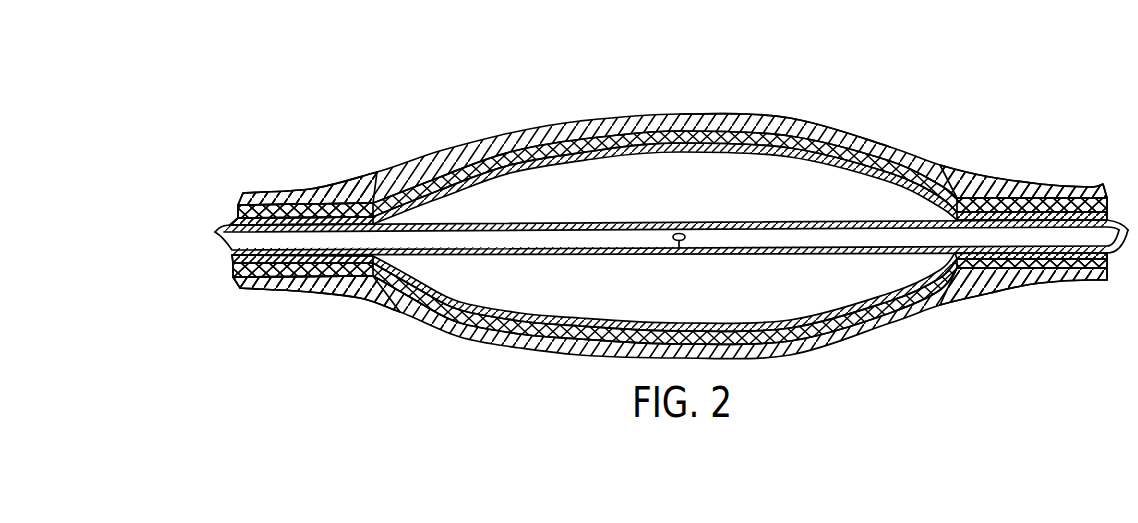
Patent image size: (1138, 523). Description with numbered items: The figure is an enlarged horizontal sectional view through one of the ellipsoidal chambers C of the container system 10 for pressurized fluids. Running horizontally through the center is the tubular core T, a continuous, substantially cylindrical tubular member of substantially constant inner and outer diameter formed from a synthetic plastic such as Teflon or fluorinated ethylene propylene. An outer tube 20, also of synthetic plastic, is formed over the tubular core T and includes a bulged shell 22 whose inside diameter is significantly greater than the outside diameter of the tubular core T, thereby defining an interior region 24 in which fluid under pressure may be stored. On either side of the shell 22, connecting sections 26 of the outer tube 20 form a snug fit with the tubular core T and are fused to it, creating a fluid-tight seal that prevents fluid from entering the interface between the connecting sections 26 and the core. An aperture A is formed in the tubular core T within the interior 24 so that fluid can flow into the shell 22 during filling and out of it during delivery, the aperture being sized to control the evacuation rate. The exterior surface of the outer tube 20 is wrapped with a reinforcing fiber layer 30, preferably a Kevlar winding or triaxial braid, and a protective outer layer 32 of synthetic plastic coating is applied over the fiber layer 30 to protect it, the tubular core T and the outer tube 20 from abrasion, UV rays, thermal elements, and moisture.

The container system 10 is at (671, 200).
The outer tube 20 is at (668, 147).
The shell region 22 is at (767, 158).
The interior region 24 is at (644, 200).
The connecting section 26 is at (1073, 213).
The fiber layer 30 is at (398, 303).
The protective outer layer 32 is at (472, 137).
The aperture A is at (673, 250).
The chamber C is at (797, 118).
The tubular core T is at (826, 250).